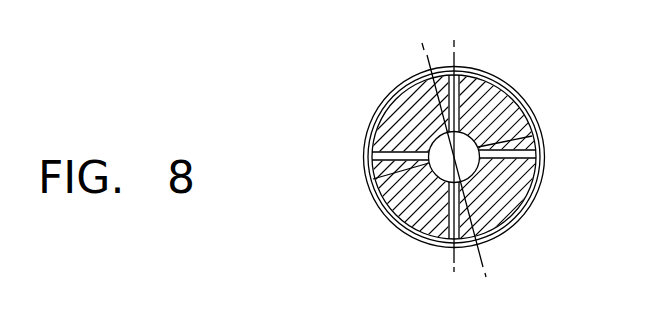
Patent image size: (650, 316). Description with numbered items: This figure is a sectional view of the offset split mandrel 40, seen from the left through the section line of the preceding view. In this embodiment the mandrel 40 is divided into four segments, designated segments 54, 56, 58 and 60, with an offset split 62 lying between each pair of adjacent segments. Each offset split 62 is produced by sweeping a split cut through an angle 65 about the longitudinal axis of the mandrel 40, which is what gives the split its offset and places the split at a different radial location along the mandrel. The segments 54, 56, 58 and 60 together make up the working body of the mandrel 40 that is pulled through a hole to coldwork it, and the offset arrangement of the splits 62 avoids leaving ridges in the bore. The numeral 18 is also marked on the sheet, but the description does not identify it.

The mandrel 40 is at (425, 152).
The segment 54 is at (513, 105).
The segment 56 is at (518, 196).
The segment 58 is at (403, 213).
The segment 60 is at (395, 119).
The offset split 62 is at (442, 77).
The angle 65 is at (438, 53).
The shank 18 is at (371, 6).